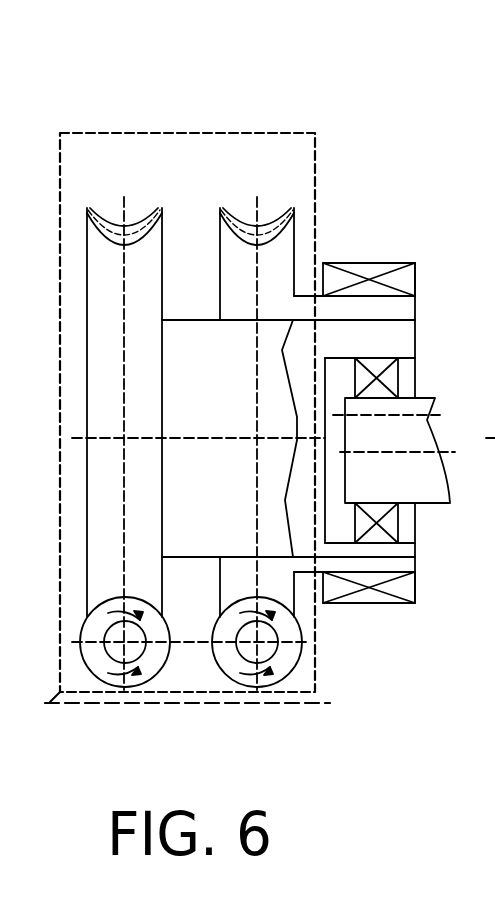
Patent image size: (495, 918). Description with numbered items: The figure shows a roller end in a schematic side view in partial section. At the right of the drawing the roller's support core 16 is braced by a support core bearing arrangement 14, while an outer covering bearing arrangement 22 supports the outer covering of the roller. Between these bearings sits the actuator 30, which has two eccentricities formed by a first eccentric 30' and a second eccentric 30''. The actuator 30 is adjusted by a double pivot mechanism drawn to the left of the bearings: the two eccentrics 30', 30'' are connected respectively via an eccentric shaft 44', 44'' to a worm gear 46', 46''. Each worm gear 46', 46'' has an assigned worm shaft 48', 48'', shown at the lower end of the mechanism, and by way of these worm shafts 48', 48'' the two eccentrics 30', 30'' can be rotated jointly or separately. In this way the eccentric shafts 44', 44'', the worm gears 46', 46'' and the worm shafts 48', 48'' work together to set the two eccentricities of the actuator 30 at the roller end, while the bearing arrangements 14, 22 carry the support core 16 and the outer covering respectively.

The worm gear 46' is at (116, 169).
The worm gear 46'' is at (256, 169).
The outer covering bearing arrangement 22 is at (370, 272).
The actuator 30 is at (357, 377).
The eccentric 30'' is at (386, 400).
The eccentric 30' is at (398, 438).
The support core bearing arrangement 14 is at (390, 377).
The support core 16 is at (408, 472).
The eccentric shaft 44' is at (190, 481).
The eccentric shaft 44'' is at (300, 439).
The worm shaft 48' is at (118, 674).
The worm shaft 48'' is at (274, 674).